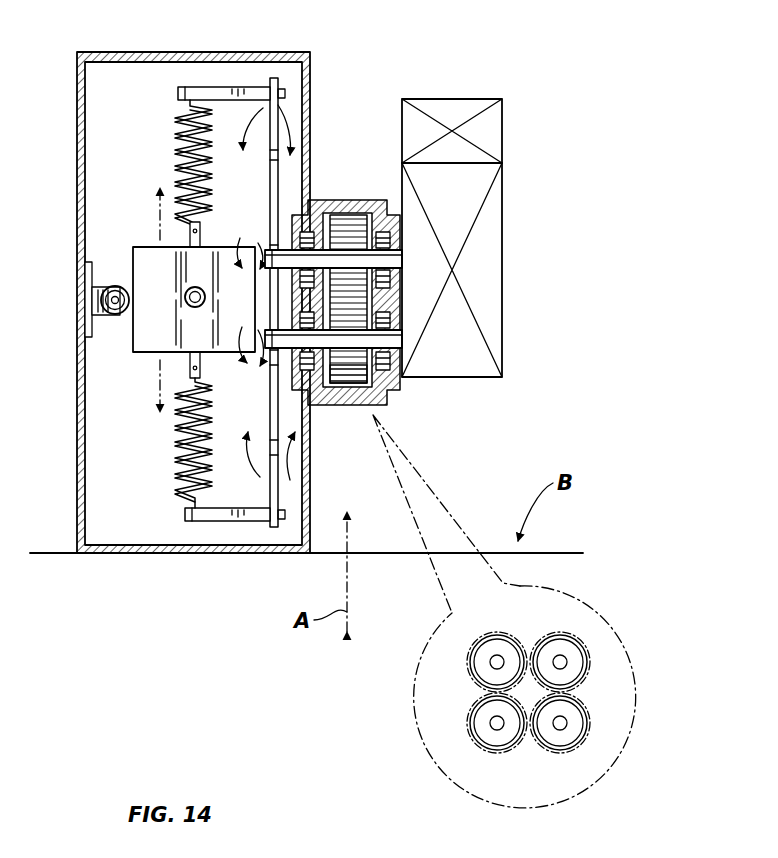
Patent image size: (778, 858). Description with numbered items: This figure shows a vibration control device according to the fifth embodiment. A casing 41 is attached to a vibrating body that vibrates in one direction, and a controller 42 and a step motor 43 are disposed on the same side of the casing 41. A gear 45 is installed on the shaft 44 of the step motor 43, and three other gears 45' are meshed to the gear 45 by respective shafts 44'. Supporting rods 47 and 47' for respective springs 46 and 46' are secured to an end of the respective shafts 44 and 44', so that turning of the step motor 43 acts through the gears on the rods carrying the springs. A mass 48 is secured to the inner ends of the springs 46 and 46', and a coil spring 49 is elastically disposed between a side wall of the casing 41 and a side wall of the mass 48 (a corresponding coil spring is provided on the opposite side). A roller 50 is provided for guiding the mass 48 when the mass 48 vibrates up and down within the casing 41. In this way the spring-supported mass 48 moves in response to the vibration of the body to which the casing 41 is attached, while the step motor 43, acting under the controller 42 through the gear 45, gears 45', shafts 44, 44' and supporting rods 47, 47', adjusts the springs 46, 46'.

The casing 41 is at (152, 52).
The controller 42 is at (458, 100).
The step motor 43 is at (490, 292).
The shaft 44 is at (370, 348).
The shaft 44' is at (372, 232).
The gear 45 is at (428, 566).
The gear 45' is at (489, 477).
The spring 46 is at (161, 173).
The spring 46' is at (160, 430).
The supporting rod 47 is at (270, 80).
The supporting rod 47' is at (239, 549).
The mass 48 is at (152, 258).
The coil spring 49 is at (186, 303).
The roller 50 is at (103, 316).